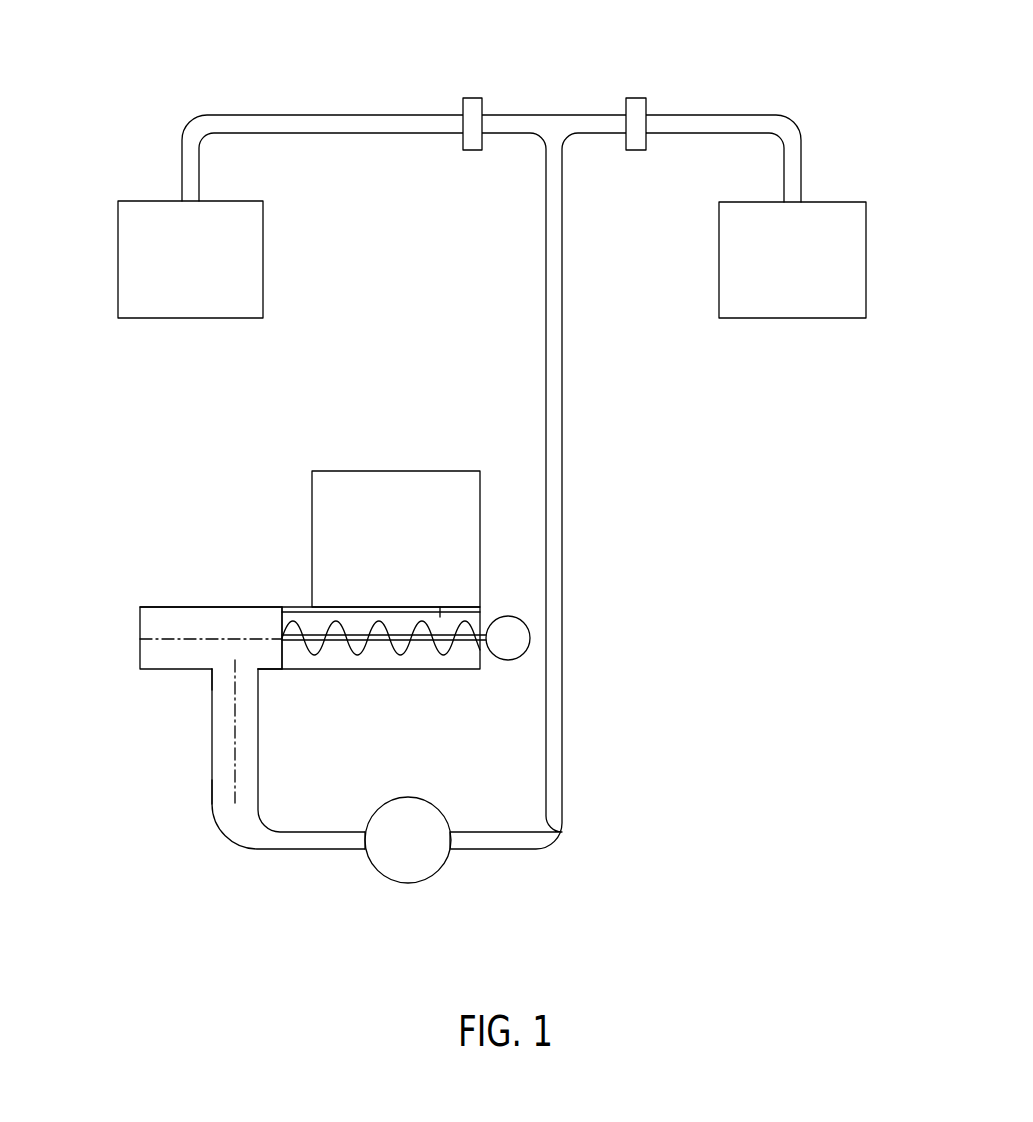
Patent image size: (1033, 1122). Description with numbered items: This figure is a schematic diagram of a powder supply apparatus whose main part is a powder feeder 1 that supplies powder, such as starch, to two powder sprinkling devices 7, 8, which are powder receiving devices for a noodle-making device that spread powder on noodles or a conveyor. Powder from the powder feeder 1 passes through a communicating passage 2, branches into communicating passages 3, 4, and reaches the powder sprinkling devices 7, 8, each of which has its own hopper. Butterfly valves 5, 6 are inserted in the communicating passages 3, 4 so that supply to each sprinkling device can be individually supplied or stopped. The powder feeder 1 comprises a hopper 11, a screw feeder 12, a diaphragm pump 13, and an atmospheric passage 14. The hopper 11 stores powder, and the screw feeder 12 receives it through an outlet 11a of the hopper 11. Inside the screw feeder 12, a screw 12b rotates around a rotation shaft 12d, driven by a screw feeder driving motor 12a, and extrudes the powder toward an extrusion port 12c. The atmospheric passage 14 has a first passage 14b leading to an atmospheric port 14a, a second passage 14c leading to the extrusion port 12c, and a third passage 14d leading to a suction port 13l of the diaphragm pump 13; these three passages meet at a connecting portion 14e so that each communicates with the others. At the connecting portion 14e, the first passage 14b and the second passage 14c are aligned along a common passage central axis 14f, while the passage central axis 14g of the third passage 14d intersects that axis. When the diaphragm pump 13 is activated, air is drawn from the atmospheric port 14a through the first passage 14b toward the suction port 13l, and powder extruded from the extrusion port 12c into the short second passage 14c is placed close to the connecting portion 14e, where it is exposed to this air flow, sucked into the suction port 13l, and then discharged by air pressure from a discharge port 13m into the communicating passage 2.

The powder feeder 1 is at (220, 476).
The communicating passage 2 is at (562, 392).
The communicating passage 3 is at (313, 115).
The communicating passage 4 is at (715, 115).
The butterfly valve 5 is at (474, 98).
The butterfly valve 6 is at (636, 98).
The powder sprinkling device 7 is at (118, 258).
The powder sprinkling device 8 is at (866, 260).
The hopper 11 is at (377, 471).
The outlet 11a is at (440, 617).
The screw feeder 12 is at (397, 669).
The screw feeder driving motor 12a is at (508, 660).
The screw 12b is at (358, 656).
The extrusion port 12c is at (282, 617).
The rotation shaft 12d is at (423, 656).
The diaphragm pump 13 is at (408, 883).
The suction port 13l is at (366, 852).
The discharge port 13m is at (450, 852).
The atmospheric passage 14 is at (212, 730).
The atmospheric port 14a is at (140, 623).
The first passage 14b is at (163, 607).
The second passage 14c is at (273, 669).
The third passage 14d is at (212, 797).
The connecting portion 14e is at (212, 682).
The passage central axis 14f is at (238, 620).
The passage central axis 14g is at (235, 760).